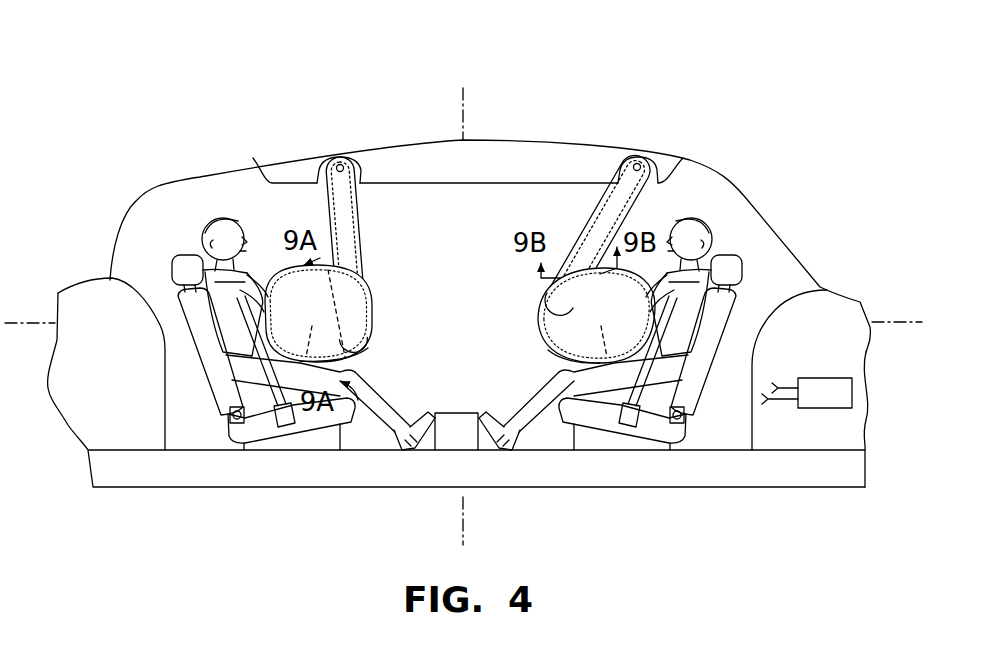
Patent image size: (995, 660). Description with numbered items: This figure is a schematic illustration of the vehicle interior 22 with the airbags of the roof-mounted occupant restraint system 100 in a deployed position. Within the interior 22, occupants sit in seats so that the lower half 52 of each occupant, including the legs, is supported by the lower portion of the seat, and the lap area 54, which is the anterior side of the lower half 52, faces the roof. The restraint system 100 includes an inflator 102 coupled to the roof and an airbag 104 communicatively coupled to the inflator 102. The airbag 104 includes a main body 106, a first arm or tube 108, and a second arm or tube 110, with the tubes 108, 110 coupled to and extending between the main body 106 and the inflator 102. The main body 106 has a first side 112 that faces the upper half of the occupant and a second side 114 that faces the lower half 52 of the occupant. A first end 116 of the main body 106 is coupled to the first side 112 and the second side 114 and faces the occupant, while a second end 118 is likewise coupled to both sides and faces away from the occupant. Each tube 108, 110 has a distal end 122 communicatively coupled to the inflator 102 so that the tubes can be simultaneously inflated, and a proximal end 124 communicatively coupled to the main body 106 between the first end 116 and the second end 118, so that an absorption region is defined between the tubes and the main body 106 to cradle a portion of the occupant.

The interior 22 is at (743, 212).
The lower half 52 is at (376, 364).
The lap area 54 is at (454, 329).
The roof-mounted occupant restraint system 100 is at (300, 176).
The inflator 102 is at (361, 165).
The airbag 104 is at (256, 288).
The main body 106 is at (205, 292).
The first arm or tube 108 is at (353, 263).
The second arm or tube 110 is at (338, 240).
The first side 112 is at (262, 272).
The second side 114 is at (322, 372).
The first end 116 is at (252, 306).
The second end 118 is at (374, 328).
The distal end 122 is at (331, 163).
The proximal end 124 is at (356, 293).